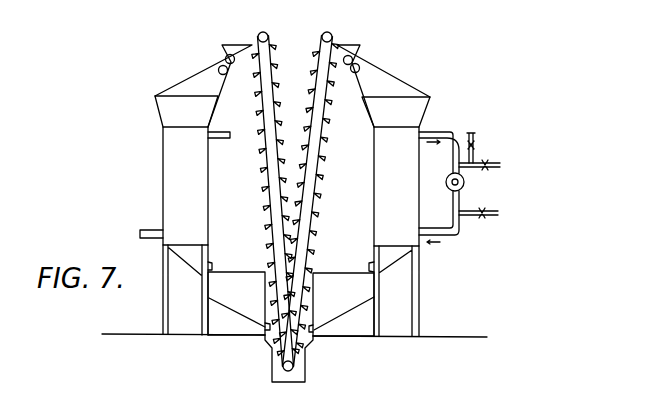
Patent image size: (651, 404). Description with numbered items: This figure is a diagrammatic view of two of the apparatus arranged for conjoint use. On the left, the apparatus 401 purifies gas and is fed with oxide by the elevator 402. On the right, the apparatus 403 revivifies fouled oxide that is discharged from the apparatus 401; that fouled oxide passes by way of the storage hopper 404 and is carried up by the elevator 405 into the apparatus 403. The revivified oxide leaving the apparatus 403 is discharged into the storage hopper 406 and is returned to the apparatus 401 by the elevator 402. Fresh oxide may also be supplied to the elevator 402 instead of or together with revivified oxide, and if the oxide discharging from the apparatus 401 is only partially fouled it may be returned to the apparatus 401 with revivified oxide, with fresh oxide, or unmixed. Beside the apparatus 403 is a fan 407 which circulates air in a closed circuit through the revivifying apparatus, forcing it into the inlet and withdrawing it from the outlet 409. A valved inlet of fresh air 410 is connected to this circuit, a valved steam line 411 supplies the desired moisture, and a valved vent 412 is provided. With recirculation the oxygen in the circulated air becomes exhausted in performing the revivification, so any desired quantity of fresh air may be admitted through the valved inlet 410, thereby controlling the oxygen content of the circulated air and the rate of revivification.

The gas purifying apparatus 401 is at (188, 194).
The elevator 402 is at (259, 176).
The revivifying apparatus 403 is at (398, 199).
The storage hopper 404 is at (247, 279).
The elevator 405 is at (314, 182).
The storage hopper 406 is at (337, 279).
The fan 407 is at (464, 183).
The outlet 409 is at (442, 132).
The valved inlet of fresh air 410 is at (502, 164).
The valved steam line 411 is at (474, 135).
The valved vent 412 is at (500, 213).